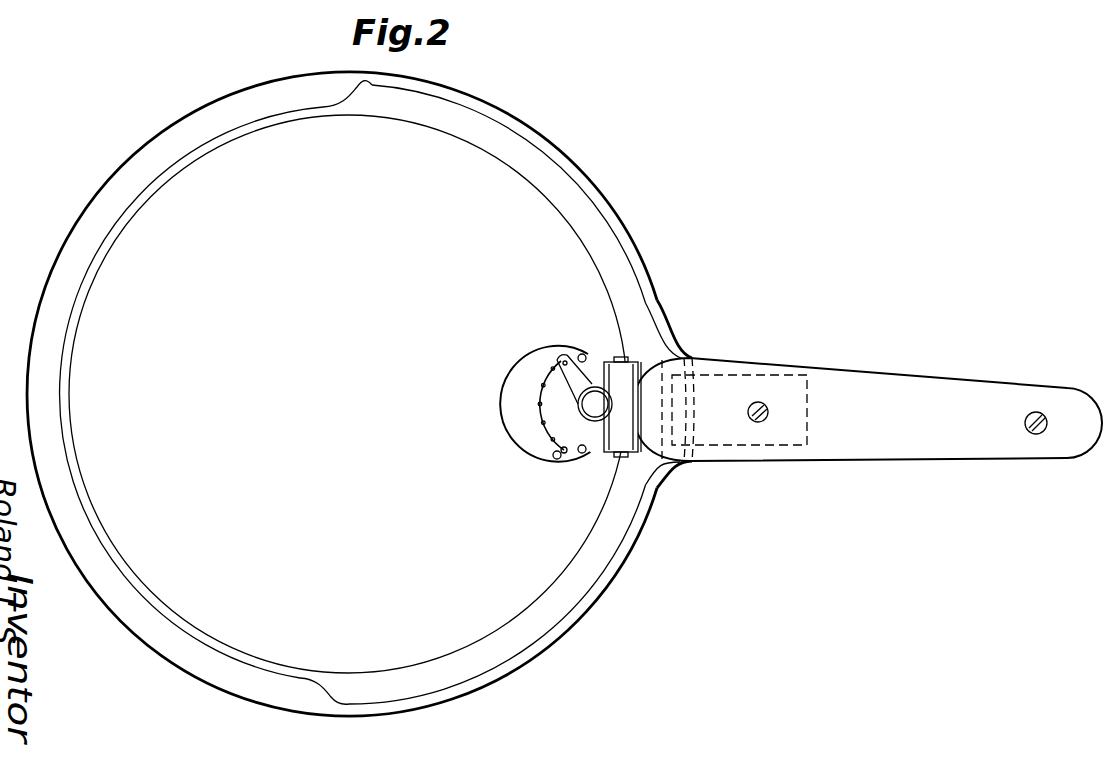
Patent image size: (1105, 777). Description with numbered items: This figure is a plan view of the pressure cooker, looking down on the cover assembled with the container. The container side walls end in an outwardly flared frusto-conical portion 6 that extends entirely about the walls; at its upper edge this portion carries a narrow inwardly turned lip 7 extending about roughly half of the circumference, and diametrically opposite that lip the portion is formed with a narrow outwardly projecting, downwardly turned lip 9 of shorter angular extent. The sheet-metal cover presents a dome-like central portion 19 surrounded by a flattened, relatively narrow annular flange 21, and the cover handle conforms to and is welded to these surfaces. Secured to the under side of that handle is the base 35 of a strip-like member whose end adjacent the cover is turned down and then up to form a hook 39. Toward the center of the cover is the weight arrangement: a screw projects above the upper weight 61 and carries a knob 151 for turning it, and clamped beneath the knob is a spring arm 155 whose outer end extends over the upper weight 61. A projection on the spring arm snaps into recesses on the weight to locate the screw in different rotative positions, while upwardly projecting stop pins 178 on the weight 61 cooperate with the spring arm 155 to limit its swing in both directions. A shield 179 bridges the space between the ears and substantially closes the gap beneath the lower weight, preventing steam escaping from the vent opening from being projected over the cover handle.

The inwardly turned lip 7 is at (111, 191).
The frusto-conical portion 6 is at (543, 146).
The annular flange 21 is at (494, 132).
The dome-like central portion 19 is at (563, 250).
The downwardly turned lip 9 is at (692, 373).
The hook 39 is at (681, 424).
The base of strip-like member 35 is at (790, 376).
The upper weight 61 is at (512, 395).
The spring arm 155 is at (588, 378).
The shield 179 is at (640, 393).
The knob 151 is at (591, 413).
The stop pins 178 is at (580, 356).